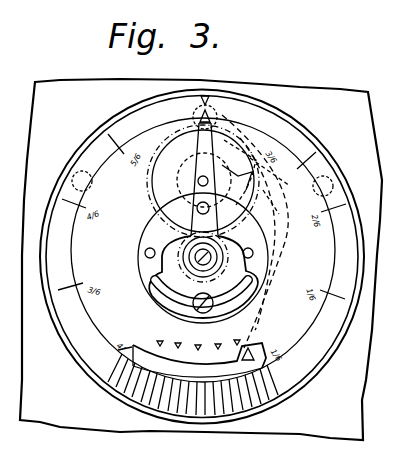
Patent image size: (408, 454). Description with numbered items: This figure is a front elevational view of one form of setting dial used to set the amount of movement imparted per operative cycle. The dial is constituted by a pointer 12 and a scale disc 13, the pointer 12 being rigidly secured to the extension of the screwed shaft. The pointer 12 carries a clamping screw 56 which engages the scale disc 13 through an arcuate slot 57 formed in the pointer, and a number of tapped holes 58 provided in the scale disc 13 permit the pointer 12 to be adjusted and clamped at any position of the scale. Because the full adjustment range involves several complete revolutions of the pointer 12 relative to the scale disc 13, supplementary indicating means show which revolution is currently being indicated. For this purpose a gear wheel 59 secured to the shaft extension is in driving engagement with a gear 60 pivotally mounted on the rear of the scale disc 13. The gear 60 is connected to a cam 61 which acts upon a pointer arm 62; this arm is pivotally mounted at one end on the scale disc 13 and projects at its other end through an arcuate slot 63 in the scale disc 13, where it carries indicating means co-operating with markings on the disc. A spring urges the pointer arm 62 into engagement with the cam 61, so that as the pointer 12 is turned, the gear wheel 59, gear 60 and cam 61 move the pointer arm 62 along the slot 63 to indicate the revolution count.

The pointer 12 is at (198, 188).
The scale disc 13 is at (326, 152).
The clamping screw 56 is at (195, 305).
The arcuate slot 57 is at (150, 293).
The tapped holes 58 is at (252, 256).
The gear wheel 59 is at (165, 242).
The gear 60 is at (278, 158).
The cam 61 is at (281, 207).
The pointer arm 62 is at (272, 321).
The arcuate slot 63 is at (262, 368).